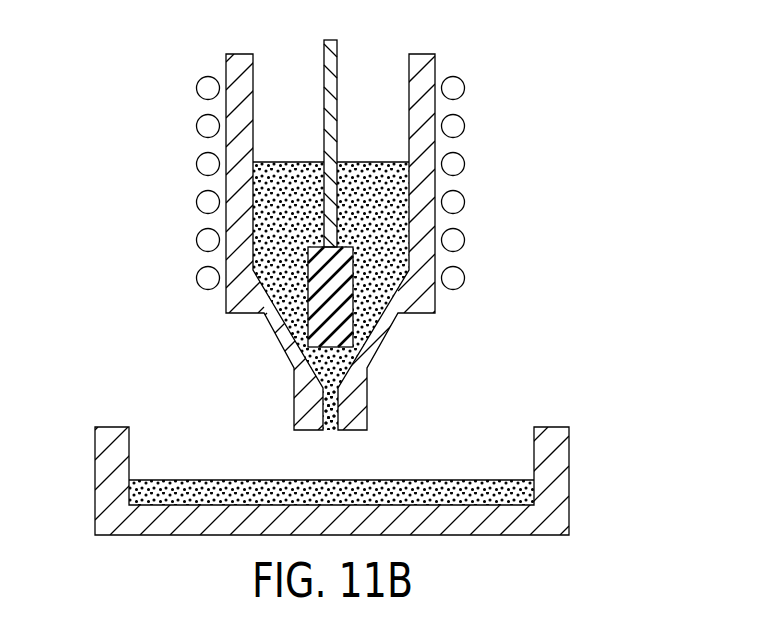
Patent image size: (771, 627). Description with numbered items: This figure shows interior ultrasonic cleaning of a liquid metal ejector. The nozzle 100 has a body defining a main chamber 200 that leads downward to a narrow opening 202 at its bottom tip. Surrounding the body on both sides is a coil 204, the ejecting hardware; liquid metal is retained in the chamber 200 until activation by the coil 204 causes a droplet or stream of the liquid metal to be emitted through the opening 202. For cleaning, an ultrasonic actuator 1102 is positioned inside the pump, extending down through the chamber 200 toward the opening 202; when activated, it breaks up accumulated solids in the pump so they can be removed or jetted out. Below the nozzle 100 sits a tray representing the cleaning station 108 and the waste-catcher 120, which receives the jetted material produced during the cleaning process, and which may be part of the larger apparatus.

The nozzle 100 is at (356, 248).
The cleaning station 108 is at (349, 481).
The waste-catcher 120 is at (105, 485).
The main chamber 200 is at (240, 55).
The opening 202 is at (330, 386).
The coil 204 is at (463, 240).
The ultrasonic actuator 1102 is at (325, 46).